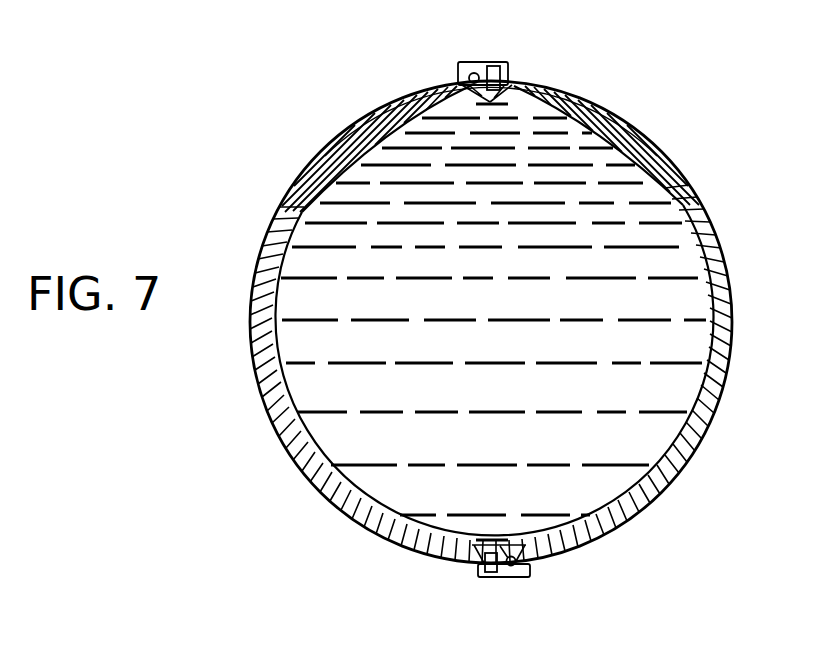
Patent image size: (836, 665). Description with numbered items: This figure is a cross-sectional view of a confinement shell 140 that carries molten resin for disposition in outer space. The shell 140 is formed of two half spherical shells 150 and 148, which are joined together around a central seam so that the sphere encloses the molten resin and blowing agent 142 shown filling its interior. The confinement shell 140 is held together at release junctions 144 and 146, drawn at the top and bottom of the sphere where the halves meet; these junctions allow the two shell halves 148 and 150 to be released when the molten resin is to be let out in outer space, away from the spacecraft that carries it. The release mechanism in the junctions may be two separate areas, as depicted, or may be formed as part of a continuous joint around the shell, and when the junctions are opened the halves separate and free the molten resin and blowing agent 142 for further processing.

The confinement shell 140 is at (645, 152).
The molten resin and blowing agent 142 is at (647, 337).
The release junction 144 is at (477, 64).
The release junction 146 is at (500, 570).
The half spherical shell 148 is at (668, 487).
The half spherical shell 150 is at (432, 537).